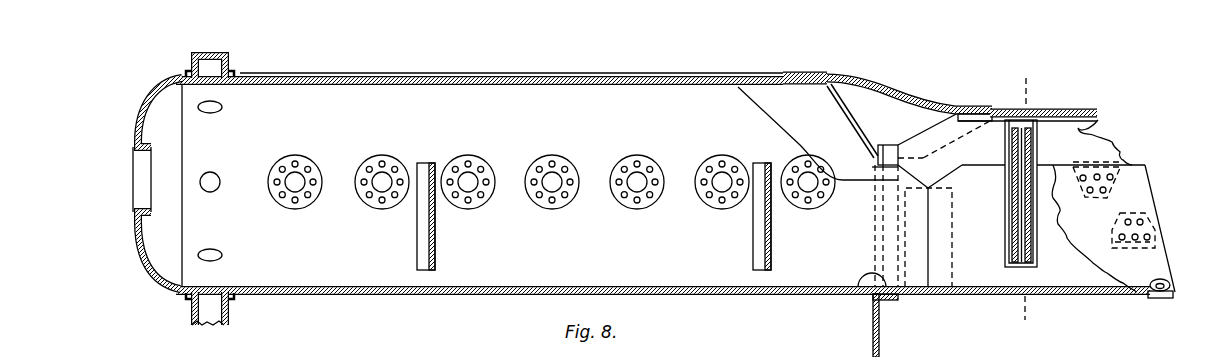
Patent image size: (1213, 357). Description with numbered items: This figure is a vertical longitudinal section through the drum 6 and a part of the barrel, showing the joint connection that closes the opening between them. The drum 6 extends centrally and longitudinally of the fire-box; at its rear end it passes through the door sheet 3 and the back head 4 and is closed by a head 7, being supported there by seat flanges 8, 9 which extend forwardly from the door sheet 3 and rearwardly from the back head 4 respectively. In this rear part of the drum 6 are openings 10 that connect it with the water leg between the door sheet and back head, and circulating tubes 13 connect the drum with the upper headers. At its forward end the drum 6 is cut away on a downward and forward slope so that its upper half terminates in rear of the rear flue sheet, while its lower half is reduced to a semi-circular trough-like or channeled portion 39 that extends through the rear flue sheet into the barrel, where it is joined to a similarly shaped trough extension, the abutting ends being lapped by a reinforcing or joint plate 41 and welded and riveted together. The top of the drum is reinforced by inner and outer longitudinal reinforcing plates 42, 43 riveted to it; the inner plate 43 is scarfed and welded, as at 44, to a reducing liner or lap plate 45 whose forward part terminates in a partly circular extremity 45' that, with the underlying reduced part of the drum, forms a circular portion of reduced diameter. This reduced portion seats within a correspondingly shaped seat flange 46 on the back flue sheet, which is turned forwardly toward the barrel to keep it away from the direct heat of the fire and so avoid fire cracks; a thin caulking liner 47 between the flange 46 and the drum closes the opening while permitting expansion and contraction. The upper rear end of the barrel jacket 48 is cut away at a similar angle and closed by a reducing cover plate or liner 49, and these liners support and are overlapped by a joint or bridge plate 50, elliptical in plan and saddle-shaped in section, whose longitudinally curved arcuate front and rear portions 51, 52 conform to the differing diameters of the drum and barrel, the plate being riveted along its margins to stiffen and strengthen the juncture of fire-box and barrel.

The door sheet 3 is at (229, 62).
The back head 4 is at (190, 58).
The drum 6 is at (663, 300).
The head 7 is at (136, 126).
The seat flange 8 is at (867, 335).
The seat flange 9 is at (425, 72).
The openings 10 is at (217, 117).
The circulating tubes 13 is at (300, 184).
The trough-like or channeled portion 39 is at (918, 221).
The reinforcing or joint plate 41 is at (954, 307).
The outer reinforcing plate 42 is at (683, 74).
The inner reinforcing plate 43 is at (676, 101).
The scarfed and welded joint 44 is at (740, 89).
The reducing liner or lap plate 45 is at (811, 121).
The partly circular extremity 45' is at (931, 137).
The seat flange 46 is at (889, 301).
The caulking liner 47 is at (863, 290).
The barrel jacket 48 is at (1066, 110).
The reducing cover plate or liner 49 is at (1100, 127).
The joint or bridge plate 50 is at (880, 80).
The arcuate front portion 51 is at (828, 72).
The arcuate rear portion 52 is at (976, 108).